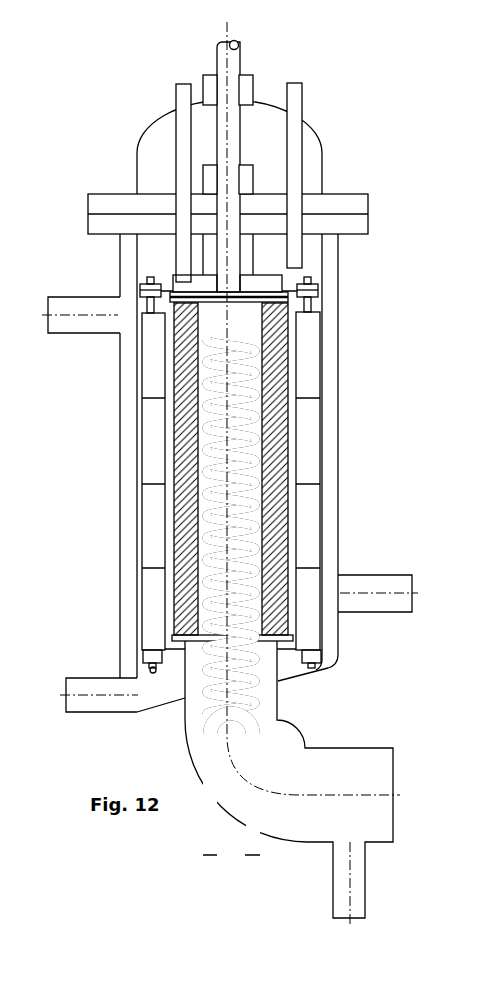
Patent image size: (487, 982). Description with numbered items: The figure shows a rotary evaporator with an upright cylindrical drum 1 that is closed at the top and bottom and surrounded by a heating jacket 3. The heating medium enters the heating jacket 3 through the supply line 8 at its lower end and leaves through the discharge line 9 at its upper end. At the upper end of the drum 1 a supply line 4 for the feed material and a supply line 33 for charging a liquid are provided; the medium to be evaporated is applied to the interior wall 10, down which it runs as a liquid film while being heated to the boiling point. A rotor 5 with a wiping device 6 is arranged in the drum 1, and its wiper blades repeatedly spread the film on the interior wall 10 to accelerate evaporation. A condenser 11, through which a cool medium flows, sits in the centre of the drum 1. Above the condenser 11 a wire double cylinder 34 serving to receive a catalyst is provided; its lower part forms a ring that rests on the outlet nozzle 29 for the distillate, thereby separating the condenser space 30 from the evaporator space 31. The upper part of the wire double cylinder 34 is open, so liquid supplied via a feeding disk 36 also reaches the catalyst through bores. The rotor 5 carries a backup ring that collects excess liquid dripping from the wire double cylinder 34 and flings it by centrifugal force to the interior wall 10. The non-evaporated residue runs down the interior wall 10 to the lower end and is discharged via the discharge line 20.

The drum 1 is at (328, 165).
The heating jacket 3 is at (332, 503).
The supply line 4 is at (303, 107).
The rotor 5 is at (312, 285).
The wiping device 6 is at (312, 338).
The supply line for heating medium 8 is at (70, 313).
The discharge line for heating medium 9 is at (402, 583).
The interior wall 10 is at (135, 287).
The condenser 11 is at (253, 577).
The discharge line 20 is at (85, 700).
The outlet nozzle 29 is at (290, 735).
The condenser space 30 is at (230, 328).
The evaporator space 31 is at (288, 395).
The supply line for charging a liquid 33 is at (175, 103).
The wire double cylinder 34 is at (282, 458).
The feeding disk 36 is at (258, 287).